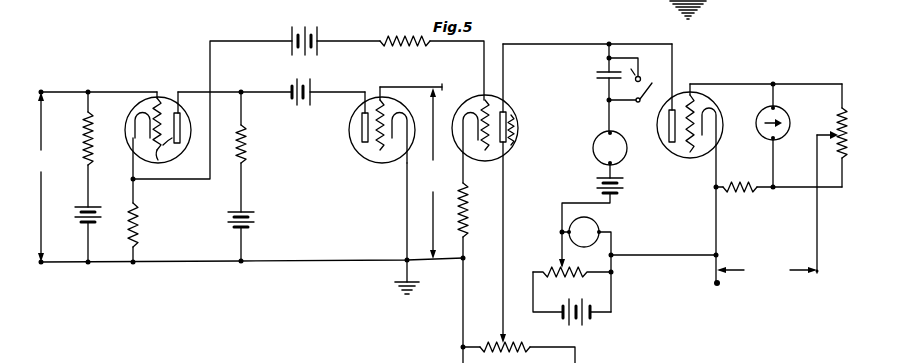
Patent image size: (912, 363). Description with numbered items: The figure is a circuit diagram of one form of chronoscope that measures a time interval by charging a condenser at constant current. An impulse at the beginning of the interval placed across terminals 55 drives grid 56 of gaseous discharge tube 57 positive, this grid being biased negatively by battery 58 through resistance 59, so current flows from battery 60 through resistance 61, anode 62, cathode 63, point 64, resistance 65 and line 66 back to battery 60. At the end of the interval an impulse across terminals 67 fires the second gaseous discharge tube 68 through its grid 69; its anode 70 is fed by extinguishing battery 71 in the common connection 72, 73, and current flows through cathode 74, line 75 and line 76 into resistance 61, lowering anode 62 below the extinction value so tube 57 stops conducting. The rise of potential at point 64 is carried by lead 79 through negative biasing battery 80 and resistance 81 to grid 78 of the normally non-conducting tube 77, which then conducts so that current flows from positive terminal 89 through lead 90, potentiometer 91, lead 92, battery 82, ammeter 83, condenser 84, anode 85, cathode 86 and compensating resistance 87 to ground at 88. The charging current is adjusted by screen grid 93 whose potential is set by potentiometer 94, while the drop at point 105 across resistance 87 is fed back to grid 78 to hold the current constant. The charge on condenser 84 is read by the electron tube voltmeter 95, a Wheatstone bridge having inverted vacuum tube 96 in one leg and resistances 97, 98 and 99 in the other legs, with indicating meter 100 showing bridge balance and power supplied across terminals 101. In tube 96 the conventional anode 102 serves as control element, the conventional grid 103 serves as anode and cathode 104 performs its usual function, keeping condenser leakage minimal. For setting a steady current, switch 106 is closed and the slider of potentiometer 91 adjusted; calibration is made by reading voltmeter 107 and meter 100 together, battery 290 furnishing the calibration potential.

The terminals 55 is at (39, 177).
The grid 56 is at (170, 152).
The tube 57 is at (128, 137).
The battery 58 is at (80, 208).
The resistance 59 is at (84, 124).
The battery 60 is at (252, 208).
The resistance 61 is at (247, 154).
The anode 62 is at (178, 122).
The cathode 63 is at (134, 122).
The point 64 is at (131, 181).
The resistance 65 is at (141, 208).
The line 66 is at (172, 261).
The terminals 67 is at (429, 173).
The second gaseous discharge tube 68 is at (349, 140).
The grid 69 is at (380, 148).
The anode 70 is at (362, 124).
The extinguishing battery 71 is at (291, 100).
The common connection 72 is at (258, 92).
The common connection 73 is at (218, 92).
The cathode 74 is at (404, 114).
The line 75 is at (406, 196).
The line 76 is at (326, 261).
The tube 77 is at (483, 162).
The grid 78 is at (487, 112).
The lead 79 is at (258, 42).
The negative biasing battery 80 is at (316, 47).
The resistance 81 is at (412, 46).
The battery 82 is at (592, 187).
The ammeter 83 is at (596, 139).
The condenser 84 is at (598, 75).
The anode 85 is at (508, 116).
The cathode 86 is at (476, 106).
The compensating resistance 87 is at (467, 209).
The ground 88 is at (461, 346).
The positive terminal 89 is at (720, 287).
The lead 90 is at (652, 255).
The potentiometer 91 is at (560, 282).
The lead 92 is at (560, 255).
The screen grid 93 is at (514, 142).
The potentiometer 94 is at (513, 343).
The electron tube voltmeter 95 is at (800, 78).
The inverted vacuum tube 96 is at (719, 142).
The resistance 97 is at (848, 126).
The resistance 98 is at (852, 152).
The resistance 99 is at (745, 193).
The indicating meter 100 is at (782, 118).
The terminals 101 is at (768, 271).
The anode 102 is at (669, 145).
The grid 103 is at (688, 154).
The cathode 104 is at (706, 112).
The point 105 is at (470, 260).
The switch 106 is at (650, 96).
The voltmeter 107 is at (600, 223).
The battery 290 is at (590, 320).